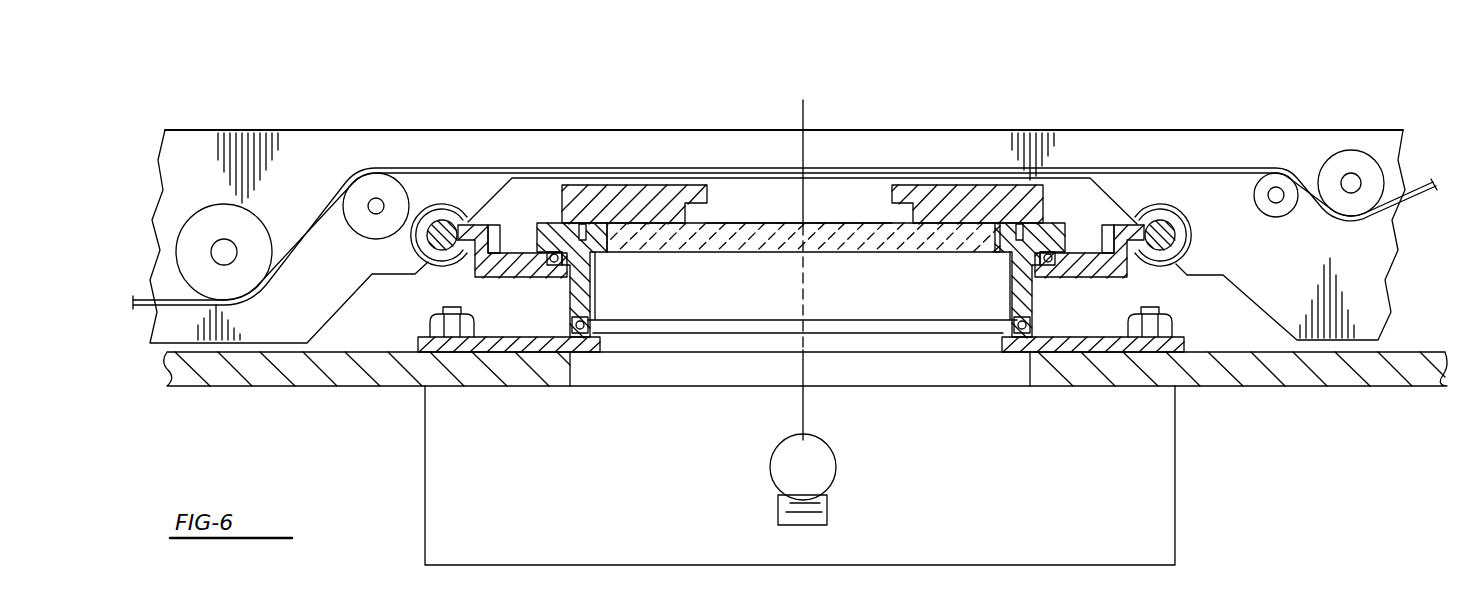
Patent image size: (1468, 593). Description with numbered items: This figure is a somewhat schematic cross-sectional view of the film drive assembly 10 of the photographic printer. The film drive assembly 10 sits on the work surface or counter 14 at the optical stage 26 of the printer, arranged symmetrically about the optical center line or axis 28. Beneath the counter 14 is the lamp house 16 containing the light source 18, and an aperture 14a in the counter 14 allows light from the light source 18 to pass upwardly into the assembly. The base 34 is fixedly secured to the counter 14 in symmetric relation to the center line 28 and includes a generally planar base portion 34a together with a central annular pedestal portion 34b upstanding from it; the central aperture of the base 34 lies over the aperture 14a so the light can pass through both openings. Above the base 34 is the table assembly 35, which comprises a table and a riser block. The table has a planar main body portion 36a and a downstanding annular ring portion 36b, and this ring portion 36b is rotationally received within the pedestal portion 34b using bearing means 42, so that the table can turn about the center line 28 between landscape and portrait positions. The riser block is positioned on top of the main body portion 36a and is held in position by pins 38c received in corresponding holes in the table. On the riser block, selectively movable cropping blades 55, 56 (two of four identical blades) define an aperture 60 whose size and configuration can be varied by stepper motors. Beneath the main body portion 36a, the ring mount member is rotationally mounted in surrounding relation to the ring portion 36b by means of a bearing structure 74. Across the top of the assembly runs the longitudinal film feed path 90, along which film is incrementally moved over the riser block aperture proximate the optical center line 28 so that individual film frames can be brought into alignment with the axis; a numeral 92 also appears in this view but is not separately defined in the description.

The film drive assembly 10 is at (330, 128).
The work surface or counter 14 is at (1400, 348).
The aperture in surface 14a is at (578, 372).
The lamp house 16 is at (1178, 450).
The light source 18 is at (826, 464).
The optical stage 26 is at (868, 360).
The optical center line or axis 28 is at (815, 115).
The base 34 is at (1186, 322).
The planar base portion 34a is at (407, 343).
The central annular pedestal portion 34b is at (528, 350).
The table assembly 35 is at (545, 207).
The planar main body portion 36a is at (1072, 258).
The downstanding annular ring portion 36b is at (595, 307).
The pins 38c is at (1043, 233).
The bearing means 42 is at (605, 342).
The cropping blade 55 is at (620, 183).
The cropping blade 56 is at (1045, 205).
The aperture 60 is at (702, 195).
The bearing structure 74 is at (543, 255).
The longitudinal film feed path 90 is at (315, 218).
The belt support plate 92 is at (985, 176).